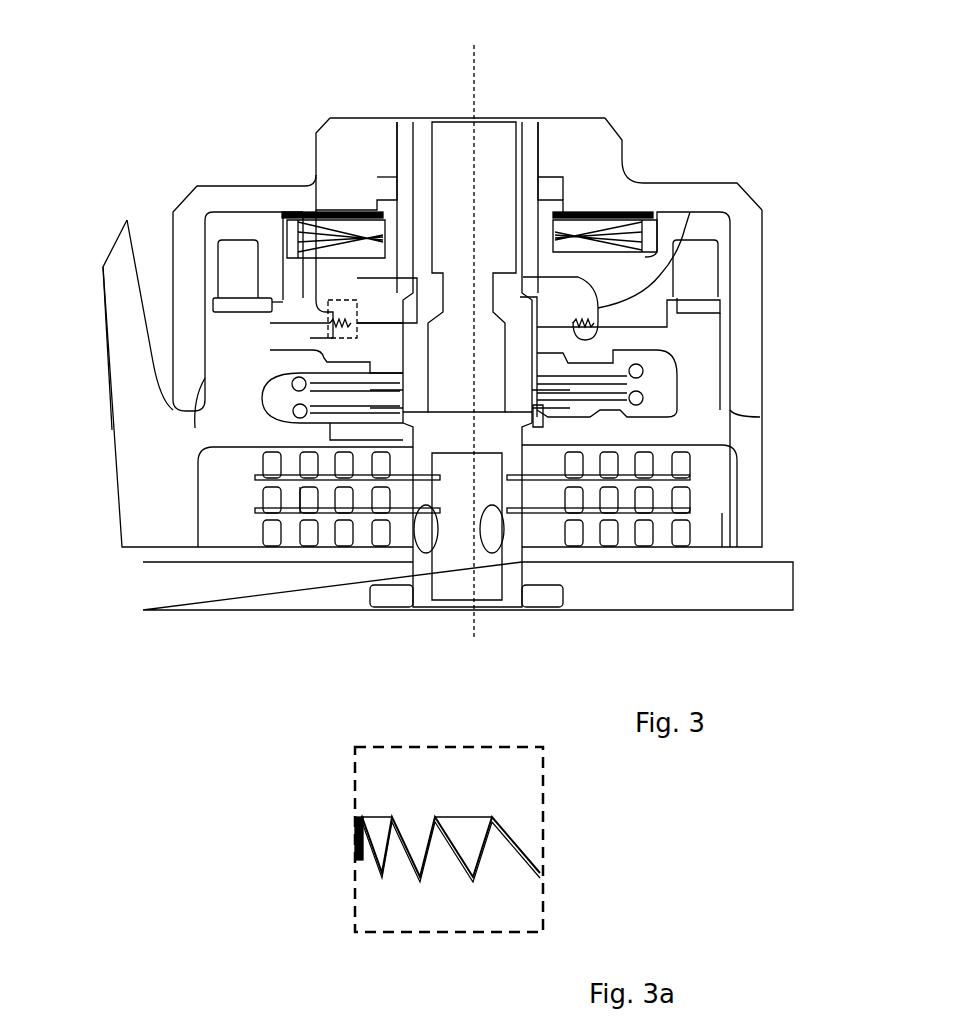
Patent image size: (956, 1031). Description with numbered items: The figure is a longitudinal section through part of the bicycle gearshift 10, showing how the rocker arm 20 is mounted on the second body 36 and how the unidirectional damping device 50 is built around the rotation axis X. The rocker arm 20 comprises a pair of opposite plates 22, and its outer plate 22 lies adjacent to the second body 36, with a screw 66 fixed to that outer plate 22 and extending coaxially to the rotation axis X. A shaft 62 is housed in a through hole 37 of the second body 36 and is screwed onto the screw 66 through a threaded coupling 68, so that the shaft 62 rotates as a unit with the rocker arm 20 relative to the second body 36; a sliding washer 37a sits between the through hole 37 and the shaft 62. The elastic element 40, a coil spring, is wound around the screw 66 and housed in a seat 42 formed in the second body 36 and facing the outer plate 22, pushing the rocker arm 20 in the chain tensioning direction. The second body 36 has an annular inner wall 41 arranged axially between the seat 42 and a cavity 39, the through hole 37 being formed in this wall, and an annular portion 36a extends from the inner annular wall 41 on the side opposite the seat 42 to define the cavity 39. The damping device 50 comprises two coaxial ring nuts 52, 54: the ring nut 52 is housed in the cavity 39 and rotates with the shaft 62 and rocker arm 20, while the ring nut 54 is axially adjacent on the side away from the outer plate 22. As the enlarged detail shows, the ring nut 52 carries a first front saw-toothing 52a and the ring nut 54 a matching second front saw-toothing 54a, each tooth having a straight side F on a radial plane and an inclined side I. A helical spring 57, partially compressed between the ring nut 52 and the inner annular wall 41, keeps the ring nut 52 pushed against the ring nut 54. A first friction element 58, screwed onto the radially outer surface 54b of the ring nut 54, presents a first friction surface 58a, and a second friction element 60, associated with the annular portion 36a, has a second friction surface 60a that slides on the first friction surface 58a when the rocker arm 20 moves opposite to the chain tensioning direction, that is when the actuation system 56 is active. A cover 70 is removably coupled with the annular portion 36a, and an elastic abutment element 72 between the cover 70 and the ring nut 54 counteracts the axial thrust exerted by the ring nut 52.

In FIG. 3, the bicycle gearshift 10 is at (208, 86).
In FIG. 3, the rocker arm 20 is at (277, 603).
In FIG. 3, the opposite plates 22 is at (600, 598).
In FIG. 3, the second body 36 is at (130, 408).
In FIG. 3, the annular portion 36a is at (212, 330).
In FIG. 3, the through hole 37 is at (545, 420).
In FIG. 3, the sliding washer 37a is at (543, 440).
In FIG. 3, the cavity 39 is at (282, 372).
In FIG. 3, the elastic element 40 is at (308, 503).
In FIG. 3, the annular inner wall 41 is at (352, 393).
In FIG. 3, the seat 42 is at (722, 513).
In FIG. 3, the unidirectional damping device 50 is at (768, 259).
In FIG. 3, the ring nut 52 is at (593, 352).
In FIG. 3A, the first front saw-toothing 52a is at (402, 858).
In FIG. 3, the ring nut 54 is at (603, 275).
In FIG. 3A, the second front saw-toothing 54a is at (418, 840).
In FIG. 3, the radially outer surface 54b is at (262, 262).
In FIG. 3, the actuation system 56 is at (665, 380).
In FIG. 3, the spring 57 is at (335, 428).
In FIG. 3, the first friction element 58 is at (235, 250).
In FIG. 3, the first friction surface 58a is at (236, 296).
In FIG. 3, the second friction element 60 is at (276, 307).
In FIG. 3, the second friction surface 60a is at (248, 300).
In FIG. 3, the shaft 62 is at (512, 293).
In FIG. 3, the screw 66 is at (523, 593).
In FIG. 3, the threaded coupling 68 is at (440, 385).
In FIG. 3, the cover 70 is at (630, 196).
In FIG. 3, the elastic abutment element 72 is at (307, 211).
In FIG. 3, the rotation axis X is at (476, 64).
In FIG. 3A, the straight side F is at (487, 850).
In FIG. 3A, the inclined side I is at (517, 843).